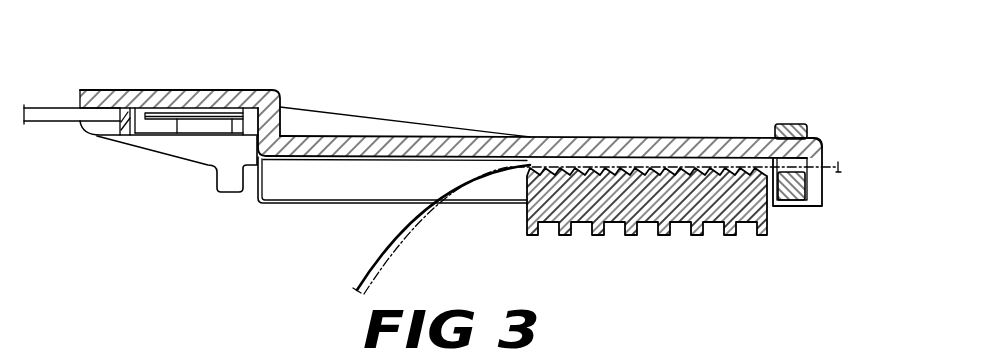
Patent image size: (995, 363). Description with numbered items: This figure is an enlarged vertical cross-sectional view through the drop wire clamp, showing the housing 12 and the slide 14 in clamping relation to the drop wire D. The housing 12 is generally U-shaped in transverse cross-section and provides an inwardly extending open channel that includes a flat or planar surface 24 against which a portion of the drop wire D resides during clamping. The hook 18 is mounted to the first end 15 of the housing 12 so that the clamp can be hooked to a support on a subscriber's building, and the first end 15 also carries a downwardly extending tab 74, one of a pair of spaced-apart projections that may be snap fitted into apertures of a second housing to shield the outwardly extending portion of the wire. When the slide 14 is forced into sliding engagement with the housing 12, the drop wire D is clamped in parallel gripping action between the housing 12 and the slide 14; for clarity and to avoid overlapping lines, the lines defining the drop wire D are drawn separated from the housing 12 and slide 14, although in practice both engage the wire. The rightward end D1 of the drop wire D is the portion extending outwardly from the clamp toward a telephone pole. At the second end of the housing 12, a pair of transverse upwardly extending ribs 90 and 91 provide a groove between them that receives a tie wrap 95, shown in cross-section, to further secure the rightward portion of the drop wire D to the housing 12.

The housing 12 is at (560, 137).
The slide 14 is at (616, 224).
The first end of housing 15 is at (163, 90).
The hook 18 is at (65, 108).
The planar surface 24 is at (303, 158).
The downwardly extending tab 74 is at (230, 192).
The transverse upwardly extending rib 90 is at (777, 137).
The transverse upwardly extending rib 91 is at (811, 138).
The tie wrap 95 is at (795, 125).
The drop wire D is at (404, 238).
The rightward end of drop wire D1 is at (826, 162).